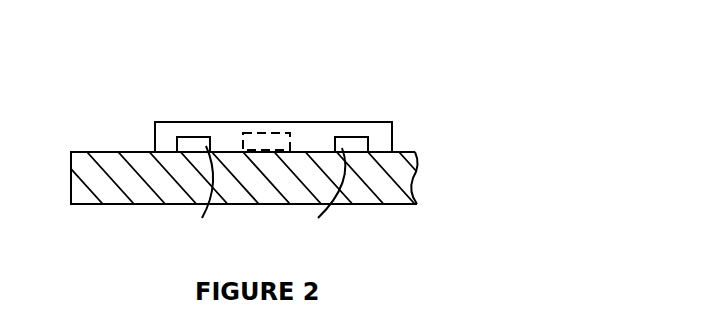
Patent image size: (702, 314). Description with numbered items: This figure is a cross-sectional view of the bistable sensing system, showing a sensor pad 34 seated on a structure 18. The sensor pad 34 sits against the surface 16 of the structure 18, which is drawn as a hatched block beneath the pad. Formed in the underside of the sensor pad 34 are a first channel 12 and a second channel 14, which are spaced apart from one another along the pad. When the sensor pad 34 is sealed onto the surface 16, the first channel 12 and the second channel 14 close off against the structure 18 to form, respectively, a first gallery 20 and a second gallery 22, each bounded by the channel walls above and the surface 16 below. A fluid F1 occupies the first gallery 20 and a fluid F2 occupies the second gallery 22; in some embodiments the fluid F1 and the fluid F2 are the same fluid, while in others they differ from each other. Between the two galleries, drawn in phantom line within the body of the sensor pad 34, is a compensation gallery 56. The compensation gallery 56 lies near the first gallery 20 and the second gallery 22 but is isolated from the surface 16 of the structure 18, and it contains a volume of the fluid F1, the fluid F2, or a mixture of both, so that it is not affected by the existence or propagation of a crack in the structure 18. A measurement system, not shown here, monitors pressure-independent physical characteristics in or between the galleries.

The first channel 12 is at (205, 137).
The second channel 14 is at (348, 137).
The surface 16 is at (403, 152).
The structure 18 is at (372, 204).
The first gallery 20 is at (192, 146).
The second gallery 22 is at (342, 147).
The sensor pad 34 is at (314, 96).
The compensation gallery 56 is at (275, 134).
The fluid F1 is at (201, 200).
The fluid F2 is at (318, 201).